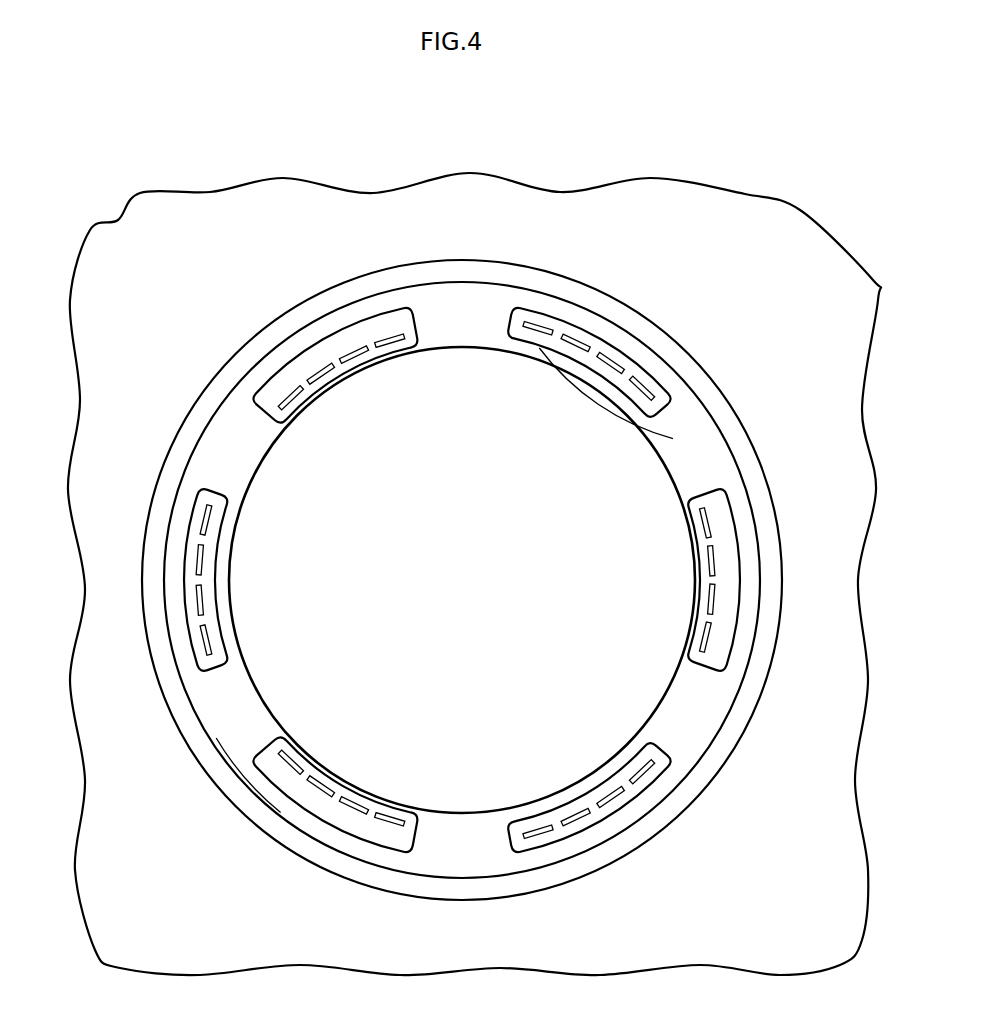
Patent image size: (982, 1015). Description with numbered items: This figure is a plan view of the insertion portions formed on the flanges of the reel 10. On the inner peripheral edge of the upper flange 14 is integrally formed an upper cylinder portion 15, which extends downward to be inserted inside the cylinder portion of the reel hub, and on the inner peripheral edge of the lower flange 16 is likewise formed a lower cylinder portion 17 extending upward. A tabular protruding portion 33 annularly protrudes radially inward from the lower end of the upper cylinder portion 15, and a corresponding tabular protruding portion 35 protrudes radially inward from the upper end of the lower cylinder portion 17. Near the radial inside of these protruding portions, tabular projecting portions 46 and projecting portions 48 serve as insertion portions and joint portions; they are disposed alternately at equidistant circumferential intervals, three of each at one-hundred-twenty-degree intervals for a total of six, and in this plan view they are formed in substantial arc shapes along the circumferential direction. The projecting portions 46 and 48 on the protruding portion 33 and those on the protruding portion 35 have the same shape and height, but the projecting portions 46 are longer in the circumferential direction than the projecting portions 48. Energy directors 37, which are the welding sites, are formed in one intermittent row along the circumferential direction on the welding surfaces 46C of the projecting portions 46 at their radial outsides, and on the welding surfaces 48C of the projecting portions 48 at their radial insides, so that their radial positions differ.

The reel 10 is at (474, 529).
The upper flange 14 is at (474, 546).
The lower flange 16 is at (667, 181).
The upper cylinder portion 15 is at (496, 580).
The lower cylinder portion 17 is at (732, 440).
The protruding portion 33 is at (533, 580).
The protruding portion 35 is at (702, 720).
The energy directors 37 is at (566, 333).
The projecting portion 46 is at (606, 372).
The welding surface 46C is at (546, 346).
The projecting portion 48 is at (328, 345).
The welding surface 48C is at (293, 790).